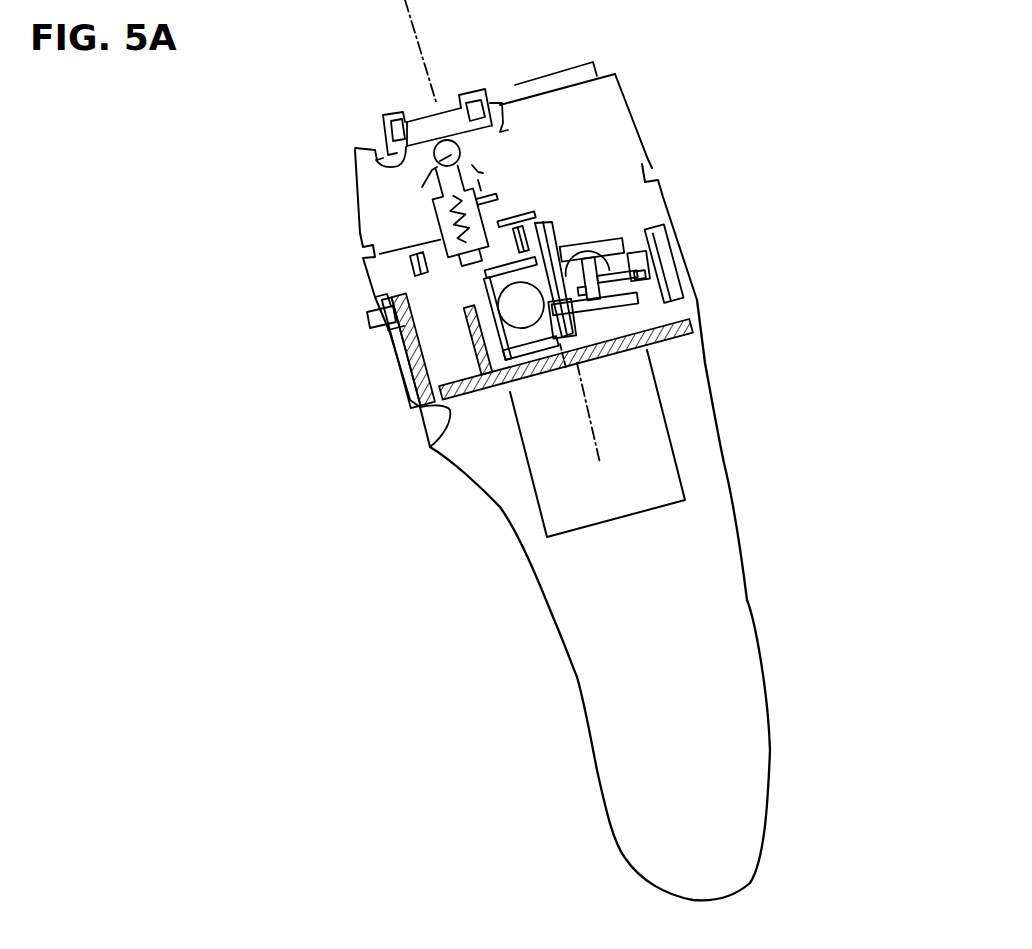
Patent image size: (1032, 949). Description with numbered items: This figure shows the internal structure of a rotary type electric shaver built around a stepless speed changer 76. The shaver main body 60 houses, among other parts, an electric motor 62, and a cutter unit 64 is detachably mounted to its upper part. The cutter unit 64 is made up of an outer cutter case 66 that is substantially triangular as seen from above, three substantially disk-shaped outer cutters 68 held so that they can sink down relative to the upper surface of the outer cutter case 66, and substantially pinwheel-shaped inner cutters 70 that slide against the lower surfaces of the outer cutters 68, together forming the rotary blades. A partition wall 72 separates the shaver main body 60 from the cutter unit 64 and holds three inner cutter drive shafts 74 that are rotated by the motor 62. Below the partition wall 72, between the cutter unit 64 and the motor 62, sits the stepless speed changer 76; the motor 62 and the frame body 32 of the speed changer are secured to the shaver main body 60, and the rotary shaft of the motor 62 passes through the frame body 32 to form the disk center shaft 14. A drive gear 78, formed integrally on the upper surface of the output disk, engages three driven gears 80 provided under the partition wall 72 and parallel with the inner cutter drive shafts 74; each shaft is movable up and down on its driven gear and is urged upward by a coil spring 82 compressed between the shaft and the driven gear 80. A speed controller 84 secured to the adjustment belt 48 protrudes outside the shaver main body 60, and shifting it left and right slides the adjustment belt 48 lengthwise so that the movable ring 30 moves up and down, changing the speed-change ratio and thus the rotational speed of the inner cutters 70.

The disk center shaft 14 is at (537, 210).
The movable ring 30 is at (620, 328).
The frame body 32 is at (430, 447).
The adjustment belt 48 is at (372, 286).
The shaver main body 60 is at (768, 598).
The electric motor 62 is at (673, 450).
The cutter unit 64 is at (643, 100).
The outer cutter case 66 is at (645, 137).
The outer cutters 68 is at (398, 116).
The inner cutters 70 is at (430, 168).
The partition wall 72 is at (585, 210).
The inner cutter drive shafts 74 is at (437, 191).
The stepless speed changer 76 is at (629, 219).
The drive gear 78 is at (540, 252).
The driven gears 80 is at (372, 266).
The coil spring 82 is at (445, 205).
The speed controller 84 is at (373, 327).